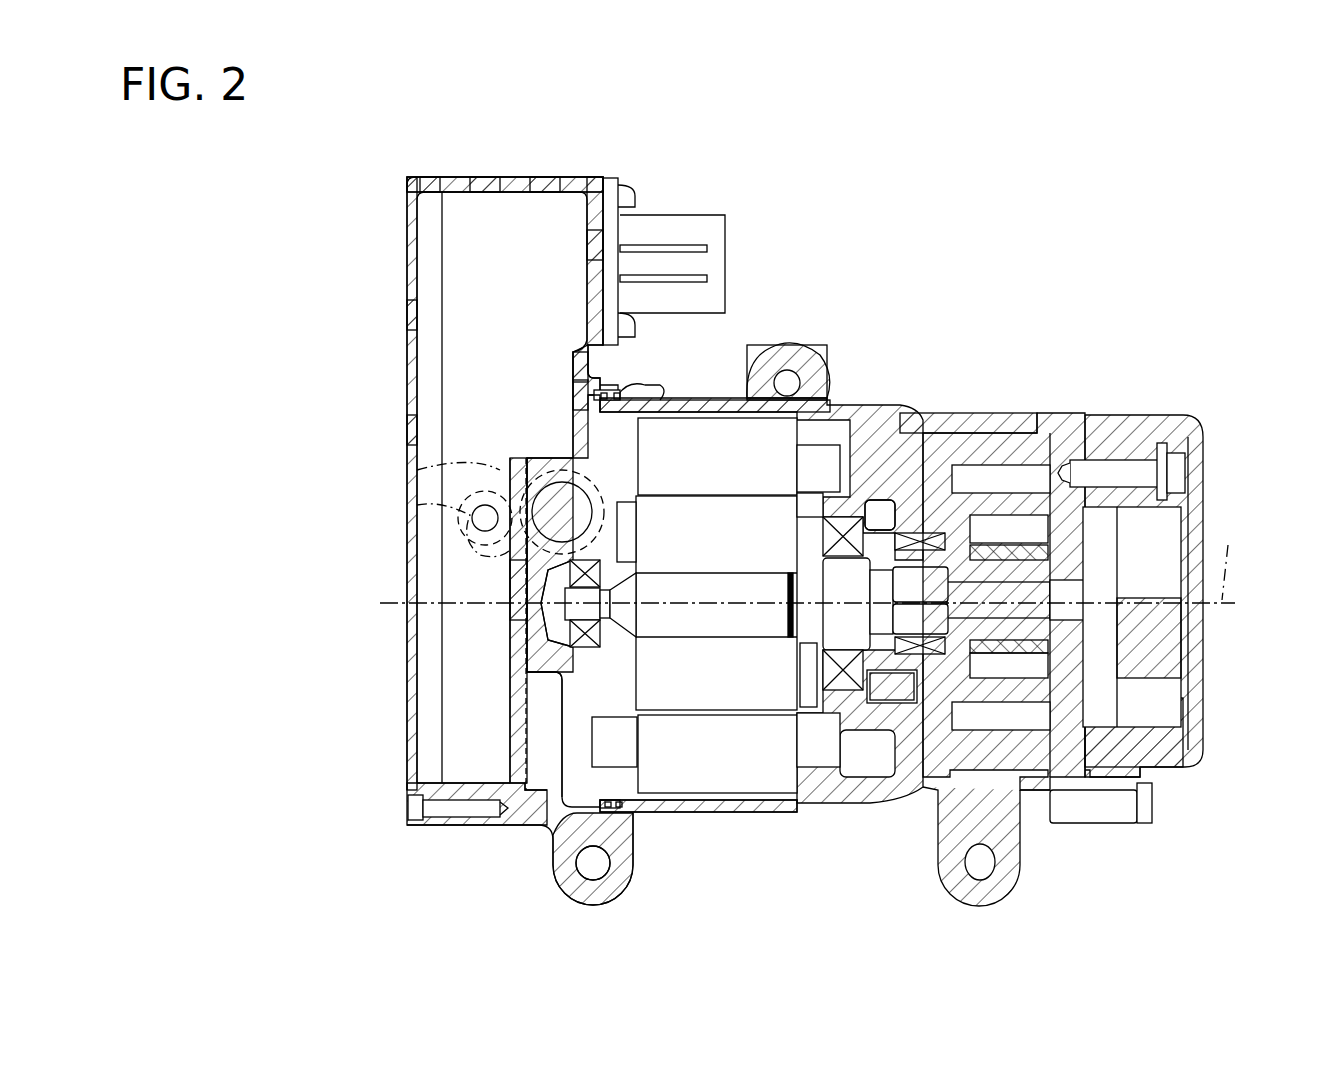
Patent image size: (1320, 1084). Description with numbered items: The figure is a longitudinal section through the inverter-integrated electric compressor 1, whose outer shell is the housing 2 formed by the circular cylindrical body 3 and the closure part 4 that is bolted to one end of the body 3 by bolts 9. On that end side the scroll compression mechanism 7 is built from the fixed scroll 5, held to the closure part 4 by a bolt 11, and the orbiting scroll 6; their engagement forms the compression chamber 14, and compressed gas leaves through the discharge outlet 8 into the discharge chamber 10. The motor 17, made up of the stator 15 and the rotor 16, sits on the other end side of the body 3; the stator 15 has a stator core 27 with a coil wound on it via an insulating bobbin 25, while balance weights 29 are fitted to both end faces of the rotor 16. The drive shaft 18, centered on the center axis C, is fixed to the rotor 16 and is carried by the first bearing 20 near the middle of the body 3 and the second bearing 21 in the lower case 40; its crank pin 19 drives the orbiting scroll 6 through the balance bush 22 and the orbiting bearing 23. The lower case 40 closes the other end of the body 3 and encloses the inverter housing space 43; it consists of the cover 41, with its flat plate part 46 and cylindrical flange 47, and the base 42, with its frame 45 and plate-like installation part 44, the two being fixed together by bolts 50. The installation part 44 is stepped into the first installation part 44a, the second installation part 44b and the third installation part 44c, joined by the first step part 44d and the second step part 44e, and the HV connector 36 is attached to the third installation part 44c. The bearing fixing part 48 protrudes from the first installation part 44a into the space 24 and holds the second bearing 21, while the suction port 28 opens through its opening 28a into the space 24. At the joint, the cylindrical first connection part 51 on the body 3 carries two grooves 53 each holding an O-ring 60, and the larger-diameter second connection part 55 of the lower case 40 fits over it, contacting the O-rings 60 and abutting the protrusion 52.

The electric compressor 1 is at (1113, 298).
The housing 2 is at (798, 328).
The body 3 is at (896, 420).
The closure part 4 is at (1133, 420).
The fixed scroll 5 is at (1068, 755).
The orbiting scroll 6 is at (935, 730).
The scroll compression mechanism 7 is at (1034, 805).
The discharge outlet 8 is at (1070, 595).
The bolt 9 is at (1145, 803).
The discharge chamber 10 is at (1183, 640).
The bolt 11 is at (1186, 470).
The compression chamber 14 is at (1020, 480).
The stator 15 is at (776, 705).
The rotor 16 is at (808, 705).
The motor 17 is at (745, 825).
The drive shaft 18 is at (742, 590).
The crank pin 19 is at (905, 588).
The first bearing 20 is at (836, 538).
The second bearing 21 is at (590, 578).
The balance bush 22 is at (960, 540).
The orbiting bearing 23 is at (930, 530).
The space 24 is at (630, 704).
The insulating bobbin 25 is at (825, 450).
The stator core 27 is at (714, 777).
The suction port 28 is at (563, 533).
The opening 28a is at (480, 520).
The balance weight 29 is at (624, 510).
The HV connector 36 is at (683, 215).
The lower case 40 is at (592, 128).
The cover 41 is at (402, 313).
The base 42 is at (487, 175).
The inverter housing space 43 is at (495, 302).
The installation part 44 is at (495, 633).
The first installation part 44a is at (520, 578).
The second installation part 44b is at (577, 365).
The third installation part 44c is at (594, 243).
The first step part 44d is at (500, 465).
The second step part 44e is at (575, 340).
The frame 45 is at (546, 185).
The flat plate part 46 is at (407, 428).
The flange 47 is at (431, 177).
The bearing fixing part 48 is at (548, 660).
The bolt 50 is at (405, 808).
The first connection part 51 is at (591, 421).
The protrusion 52 is at (650, 385).
The groove 53 is at (602, 401).
The second connection part 55 is at (620, 393).
The O-ring 60 is at (596, 394).
The center axis C is at (807, 557).